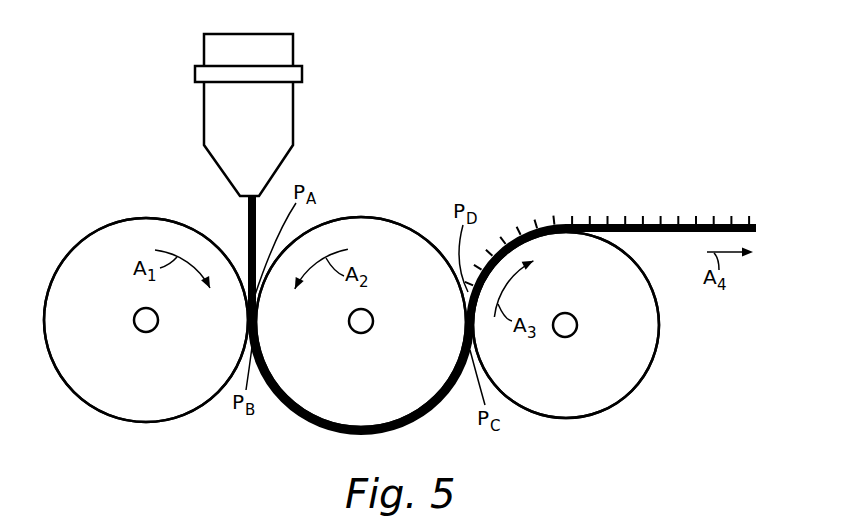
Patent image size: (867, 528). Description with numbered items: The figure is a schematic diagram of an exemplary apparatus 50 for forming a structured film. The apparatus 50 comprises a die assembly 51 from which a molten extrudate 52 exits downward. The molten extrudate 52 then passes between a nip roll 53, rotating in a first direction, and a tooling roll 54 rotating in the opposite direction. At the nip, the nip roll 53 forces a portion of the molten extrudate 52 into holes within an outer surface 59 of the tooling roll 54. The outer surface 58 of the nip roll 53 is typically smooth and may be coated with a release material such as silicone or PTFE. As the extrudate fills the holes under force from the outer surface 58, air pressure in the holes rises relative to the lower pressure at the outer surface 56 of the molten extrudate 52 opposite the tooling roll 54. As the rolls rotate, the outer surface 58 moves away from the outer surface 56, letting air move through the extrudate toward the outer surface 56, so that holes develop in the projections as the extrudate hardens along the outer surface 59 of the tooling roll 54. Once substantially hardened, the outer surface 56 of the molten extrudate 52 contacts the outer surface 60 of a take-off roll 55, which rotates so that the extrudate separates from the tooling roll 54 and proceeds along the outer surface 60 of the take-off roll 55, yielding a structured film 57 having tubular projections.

The apparatus 50 is at (490, 118).
The die assembly 51 is at (205, 110).
The molten extrudate 52 is at (247, 225).
The nip roll 53 is at (130, 232).
The tooling roll 54 is at (388, 398).
The take-off roll 55 is at (568, 403).
The outer surface of molten extrudate 56 is at (355, 430).
The structured film 57 is at (655, 223).
The outer surface of nip roll 58 is at (72, 250).
The outer surface of tooling roll 59 is at (393, 213).
The outer surface of take-off roll 60 is at (648, 372).